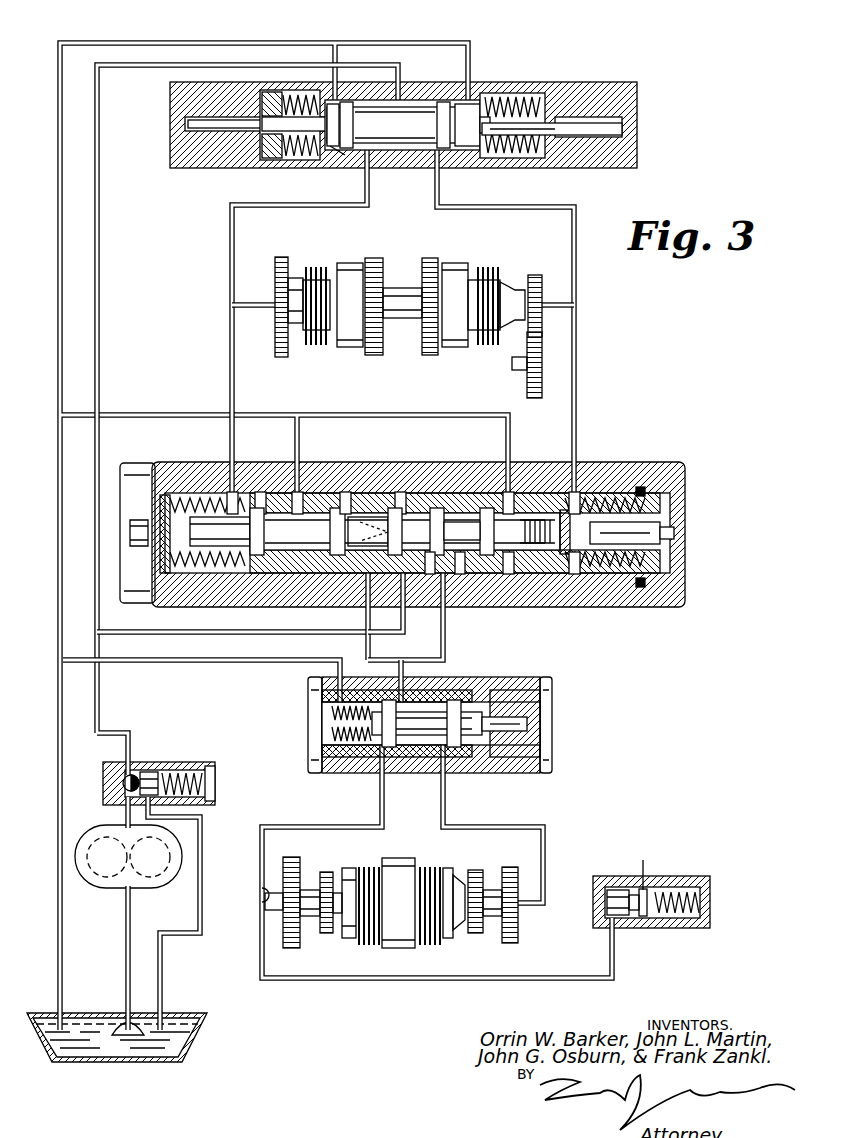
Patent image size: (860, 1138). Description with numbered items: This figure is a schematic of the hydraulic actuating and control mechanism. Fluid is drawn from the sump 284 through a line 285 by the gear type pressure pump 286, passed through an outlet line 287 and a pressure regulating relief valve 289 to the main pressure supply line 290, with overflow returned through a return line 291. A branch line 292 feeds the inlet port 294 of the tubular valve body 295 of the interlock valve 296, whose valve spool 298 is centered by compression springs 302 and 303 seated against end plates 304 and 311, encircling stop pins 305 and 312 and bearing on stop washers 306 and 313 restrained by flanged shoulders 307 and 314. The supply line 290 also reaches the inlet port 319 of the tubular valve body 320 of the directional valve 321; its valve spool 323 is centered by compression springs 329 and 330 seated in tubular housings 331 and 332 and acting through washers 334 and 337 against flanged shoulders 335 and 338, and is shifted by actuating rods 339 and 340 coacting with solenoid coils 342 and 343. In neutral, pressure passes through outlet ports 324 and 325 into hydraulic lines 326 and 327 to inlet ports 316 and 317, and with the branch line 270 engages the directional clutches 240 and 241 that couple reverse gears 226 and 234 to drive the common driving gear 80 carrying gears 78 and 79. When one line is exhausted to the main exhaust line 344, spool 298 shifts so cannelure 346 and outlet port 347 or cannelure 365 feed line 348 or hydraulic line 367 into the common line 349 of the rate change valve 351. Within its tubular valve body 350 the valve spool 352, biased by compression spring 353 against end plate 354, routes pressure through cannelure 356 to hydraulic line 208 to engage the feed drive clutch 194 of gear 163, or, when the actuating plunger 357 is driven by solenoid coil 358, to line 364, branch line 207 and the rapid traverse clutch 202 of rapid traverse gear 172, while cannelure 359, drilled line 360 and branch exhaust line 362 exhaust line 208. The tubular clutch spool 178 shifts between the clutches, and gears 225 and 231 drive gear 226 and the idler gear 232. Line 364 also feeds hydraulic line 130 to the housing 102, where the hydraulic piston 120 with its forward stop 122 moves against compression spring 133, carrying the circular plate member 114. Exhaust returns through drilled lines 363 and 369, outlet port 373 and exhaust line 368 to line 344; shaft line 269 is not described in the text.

The main exhaust line 344 is at (190, 43).
The main pressure supply line 290 is at (101, 224).
The tubular housing 331 is at (170, 94).
The solenoid coil 342 is at (185, 121).
The actuating rod 339 is at (230, 131).
The compression spring 329 is at (276, 88).
The washer 334 is at (326, 90).
The valve spool 323 is at (400, 110).
The tubular valve body 320 is at (429, 96).
The directional valve 321 is at (497, 80).
The compression spring 330 is at (520, 93).
The tubular housing 332 is at (640, 91).
The solenoid coil 343 is at (640, 128).
The inlet port 319 is at (402, 125).
The flanged shoulder 335 is at (331, 150).
The hydraulic line 326 is at (334, 192).
The outlet port 324 is at (368, 176).
The outlet port 325 is at (437, 174).
The flanged shoulder 338 is at (470, 153).
The washer 337 is at (486, 153).
The actuating rod 340 is at (573, 136).
The hydraulic line 327 is at (427, 207).
The reverse gear 226 is at (278, 264).
The directional clutch 240 is at (318, 264).
The meshing gear 78 is at (372, 259).
The common driving gear 80 is at (398, 288).
The meshing gear 79 is at (430, 258).
The directional clutch 241 is at (490, 264).
The reverse gear 234 is at (536, 274).
The branch line 270 is at (556, 300).
The shaft 269 is at (250, 309).
The idler gear 232 is at (527, 376).
The exhaust line 368 is at (406, 412).
The end plate 304 is at (131, 464).
The compression spring 302 is at (178, 494).
The inlet port 316 is at (232, 491).
The stop washer 306 is at (258, 492).
The stop pin 305 is at (201, 518).
The flanged shoulder 307 is at (274, 518).
The outlet port 373 is at (302, 518).
The drilled line 369 is at (332, 526).
The valve spool 298 is at (420, 518).
The drilled line 363 is at (476, 528).
The flanged shoulder 314 is at (546, 518).
The stop washer 313 is at (554, 470).
The inlet port 317 is at (584, 470).
The interlock valve 296 is at (613, 455).
The compression spring 303 is at (656, 485).
The end plate 311 is at (690, 483).
The stop pin 312 is at (669, 533).
The branch line 292 is at (130, 631).
The cannelure 365 is at (347, 569).
The inlet port 294 is at (387, 602).
The outlet port 347 is at (431, 570).
The cannelure 346 is at (459, 573).
The tubular valve body 295 is at (529, 580).
The branch exhaust line 362 is at (168, 660).
The hydraulic line 367 is at (365, 641).
The line 348 is at (440, 648).
The common line 349 is at (398, 669).
The drilled line 360 is at (440, 690).
The actuating plunger 357 is at (516, 700).
The solenoid coil 358 is at (551, 713).
The rate change valve 351 is at (566, 729).
The cannelure 359 is at (483, 746).
The compression spring 353 is at (345, 714).
The end plate 354 is at (312, 738).
The valve spool 352 is at (368, 749).
The cannelure 356 is at (417, 750).
The tubular valve body 350 is at (460, 773).
The pressure regulating relief valve 289 is at (130, 770).
The outlet line 287 is at (125, 809).
The gear type pressure pump 286 is at (106, 880).
The line 285 is at (128, 945).
The return line 291 is at (166, 935).
The sump 284 is at (115, 1066).
The line 364 is at (262, 848).
The branch line 207 is at (265, 892).
The gear 225 is at (300, 866).
The tubular clutch spool 178 is at (400, 866).
The gear 231 is at (515, 868).
The hydraulic line 208 is at (551, 838).
The rapid traverse gear 172 is at (327, 936).
The rapid traverse clutch 202 is at (353, 943).
The gear 163 is at (478, 936).
The feed drive clutch 194 is at (430, 951).
The hydraulic line 130 is at (556, 976).
The forward stop 122 is at (619, 885).
The circular plate member 114 is at (645, 860).
The housing 102 is at (690, 877).
The compression spring 133 is at (700, 906).
The hydraulic piston 120 is at (633, 927).